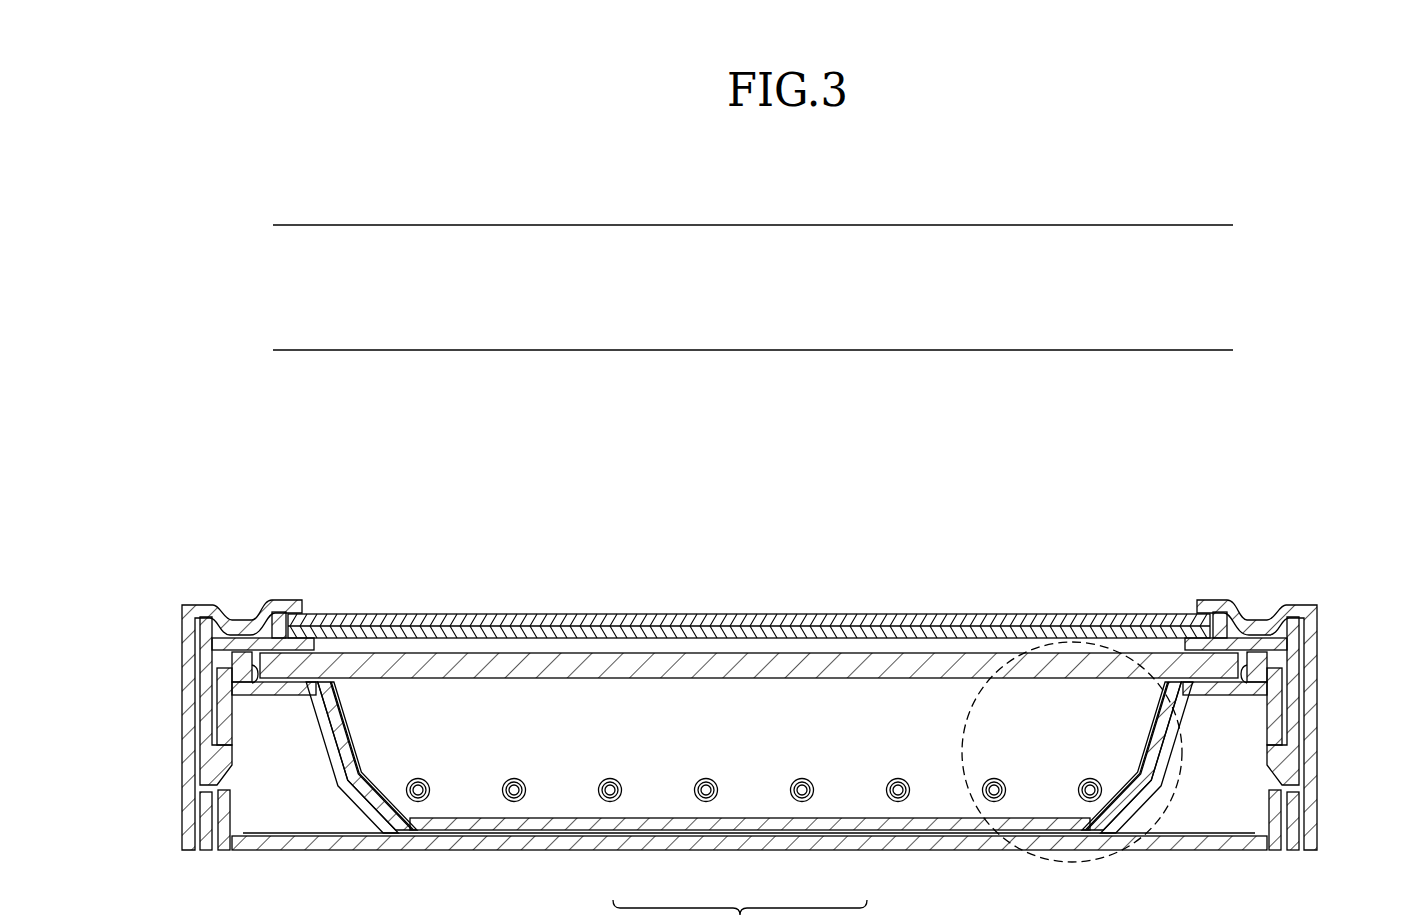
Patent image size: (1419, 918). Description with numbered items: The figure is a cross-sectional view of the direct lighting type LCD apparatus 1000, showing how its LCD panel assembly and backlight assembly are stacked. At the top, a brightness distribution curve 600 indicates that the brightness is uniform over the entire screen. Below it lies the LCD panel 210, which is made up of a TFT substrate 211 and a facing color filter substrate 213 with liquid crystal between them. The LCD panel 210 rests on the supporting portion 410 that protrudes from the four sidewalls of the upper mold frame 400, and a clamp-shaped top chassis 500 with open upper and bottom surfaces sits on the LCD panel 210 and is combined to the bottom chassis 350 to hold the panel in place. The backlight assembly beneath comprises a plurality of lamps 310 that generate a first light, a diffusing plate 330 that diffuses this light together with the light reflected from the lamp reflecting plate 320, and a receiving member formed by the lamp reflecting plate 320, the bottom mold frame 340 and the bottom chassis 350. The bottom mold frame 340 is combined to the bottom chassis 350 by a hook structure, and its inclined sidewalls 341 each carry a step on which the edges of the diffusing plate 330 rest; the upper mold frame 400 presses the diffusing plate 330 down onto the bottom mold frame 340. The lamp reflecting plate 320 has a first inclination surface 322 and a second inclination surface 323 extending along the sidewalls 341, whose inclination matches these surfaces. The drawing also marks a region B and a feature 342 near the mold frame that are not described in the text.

The brightness distribution curve 600 is at (1200, 225).
The direct lighting type LCD apparatus 1000 is at (848, 433).
The LCD panel 210 is at (808, 535).
The TFT substrate 211 is at (677, 630).
The color filter substrate 213 is at (786, 618).
The upper mold frame 400 is at (1280, 641).
The top chassis 500 is at (1293, 606).
The supporting portion 410 is at (1167, 638).
The bottom mold frame 340 is at (1280, 659).
The protrusion of mold frame 342 is at (1246, 683).
The second inclination surface 323 is at (1156, 718).
The first inclination surface 322 is at (1093, 830).
The sidewalls 341 is at (1177, 772).
The diffusing plate 330 is at (640, 667).
The lamps 310 is at (706, 802).
The lamp reflecting plate 320 is at (776, 830).
The bottom chassis 350 is at (850, 842).
The enlarged portion B is at (1118, 848).